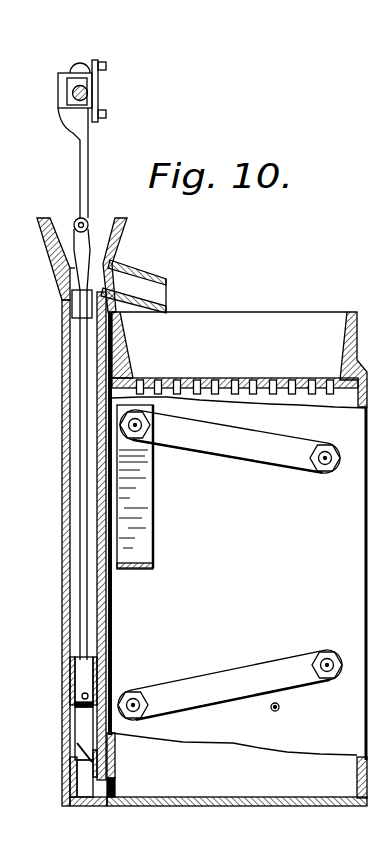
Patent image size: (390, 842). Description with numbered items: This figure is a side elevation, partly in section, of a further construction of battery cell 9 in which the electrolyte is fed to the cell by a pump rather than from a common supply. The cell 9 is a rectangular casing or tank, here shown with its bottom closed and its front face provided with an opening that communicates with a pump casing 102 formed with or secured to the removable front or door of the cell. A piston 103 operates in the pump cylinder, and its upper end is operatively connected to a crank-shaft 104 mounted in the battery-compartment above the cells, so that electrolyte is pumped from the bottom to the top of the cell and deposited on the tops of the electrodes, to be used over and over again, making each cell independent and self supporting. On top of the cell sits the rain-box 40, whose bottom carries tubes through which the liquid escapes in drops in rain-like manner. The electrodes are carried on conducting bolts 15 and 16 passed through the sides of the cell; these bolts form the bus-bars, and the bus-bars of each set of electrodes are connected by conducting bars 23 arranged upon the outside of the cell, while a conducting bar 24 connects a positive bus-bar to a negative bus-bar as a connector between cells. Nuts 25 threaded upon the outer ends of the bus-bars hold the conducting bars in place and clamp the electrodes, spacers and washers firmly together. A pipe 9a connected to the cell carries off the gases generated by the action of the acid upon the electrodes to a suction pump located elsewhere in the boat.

The crank-shaft 104 is at (93, 93).
The pump casing 102 is at (78, 600).
The piston 103 is at (82, 677).
The cell 9 is at (237, 559).
The pipe 9a is at (272, 712).
The rain-box 40 is at (239, 359).
The conducting bar 24 is at (153, 514).
The conducting bars 23 is at (230, 565).
The nuts 25 is at (122, 424).
The bolts 15 is at (148, 438).
The bolts 16 is at (322, 684).